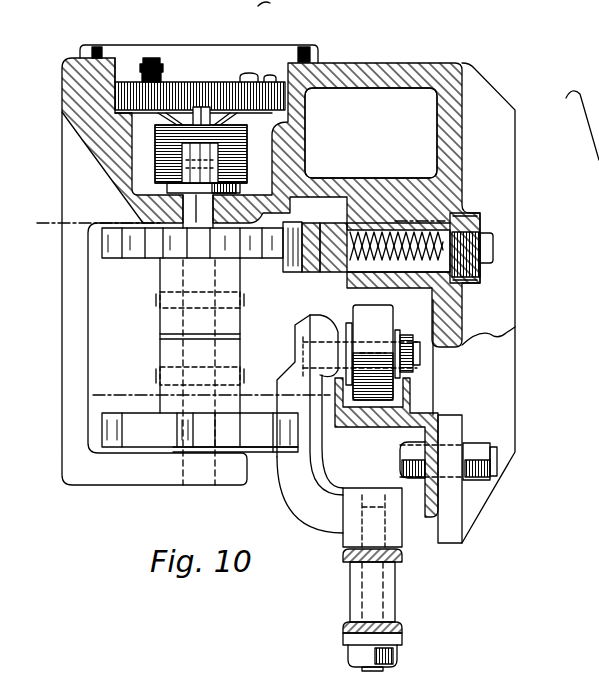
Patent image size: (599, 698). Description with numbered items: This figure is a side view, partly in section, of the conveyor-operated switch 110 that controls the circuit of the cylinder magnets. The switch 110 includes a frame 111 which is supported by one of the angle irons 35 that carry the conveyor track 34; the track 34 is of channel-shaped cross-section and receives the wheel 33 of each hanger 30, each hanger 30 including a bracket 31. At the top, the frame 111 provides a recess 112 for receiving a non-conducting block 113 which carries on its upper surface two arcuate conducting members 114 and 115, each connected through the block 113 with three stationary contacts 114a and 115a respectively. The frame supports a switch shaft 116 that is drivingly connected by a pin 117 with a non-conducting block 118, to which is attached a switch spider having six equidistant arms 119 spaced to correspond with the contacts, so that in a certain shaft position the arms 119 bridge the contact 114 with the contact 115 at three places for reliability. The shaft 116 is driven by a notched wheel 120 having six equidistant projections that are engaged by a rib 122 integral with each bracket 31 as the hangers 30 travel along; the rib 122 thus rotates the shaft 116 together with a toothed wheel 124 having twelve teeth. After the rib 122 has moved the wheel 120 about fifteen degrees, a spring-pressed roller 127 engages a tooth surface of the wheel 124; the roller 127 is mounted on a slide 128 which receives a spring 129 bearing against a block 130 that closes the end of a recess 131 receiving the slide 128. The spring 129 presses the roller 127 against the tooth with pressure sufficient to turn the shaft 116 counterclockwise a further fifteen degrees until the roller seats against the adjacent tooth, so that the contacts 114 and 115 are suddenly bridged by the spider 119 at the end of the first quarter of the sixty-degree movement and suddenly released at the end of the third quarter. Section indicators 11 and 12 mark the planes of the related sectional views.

The switch 110 is at (528, 80).
The frame 111 is at (367, 66).
The recess 112 is at (127, 57).
The non-conducting block 113 is at (270, 85).
The arcuate conducting member 114 is at (177, 82).
The stationary contacts 114a is at (122, 140).
The arcuate conducting member 115 is at (253, 82).
The stationary contacts 115a is at (305, 103).
The switch shaft 116 is at (263, 195).
The pin 117 is at (243, 163).
The non-conducting block 118 is at (243, 145).
The switch spider arms 119 is at (160, 118).
The notched wheel 120 is at (153, 437).
The rib 122 is at (285, 463).
The toothed wheel 124 is at (142, 250).
The spring-pressed roller 127 is at (293, 273).
The slide 128 is at (342, 218).
The spring 129 is at (385, 235).
The block 130 is at (473, 233).
The recess 131 is at (470, 213).
The hanger 30 is at (334, 594).
The bracket 31 is at (326, 472).
The wheel 33 is at (383, 310).
The track 34 is at (410, 393).
The angle irons 35 is at (438, 413).
The section line 11- 11 is at (48, 220).
The section line 12- 12 is at (105, 392).